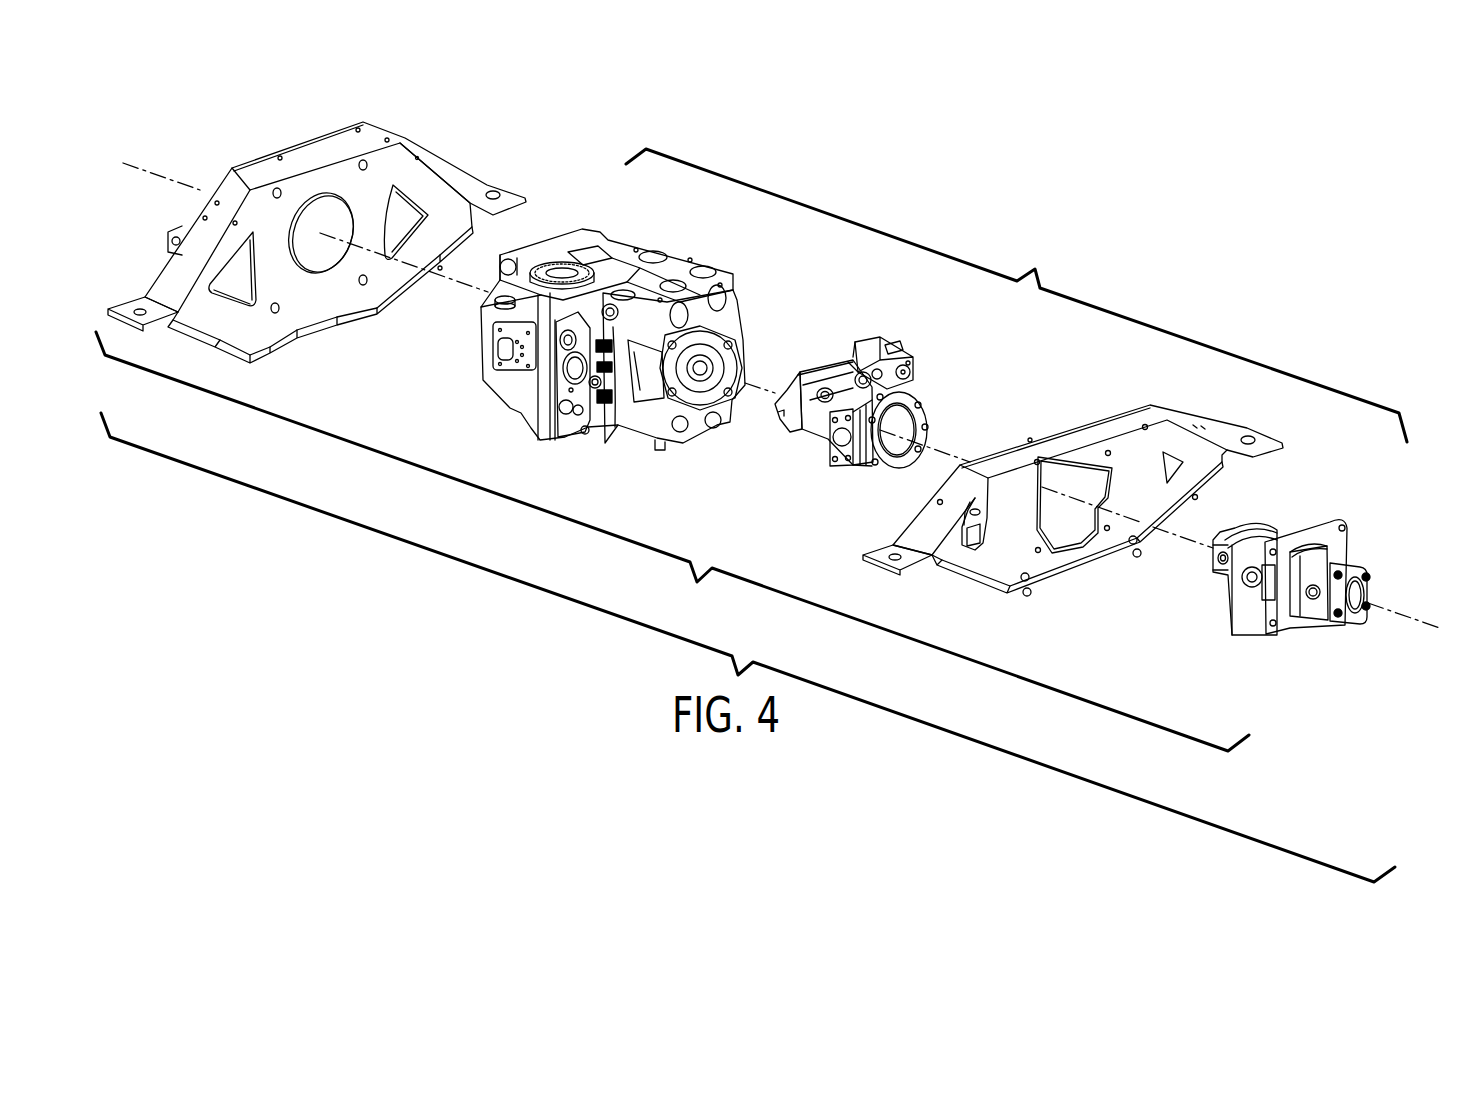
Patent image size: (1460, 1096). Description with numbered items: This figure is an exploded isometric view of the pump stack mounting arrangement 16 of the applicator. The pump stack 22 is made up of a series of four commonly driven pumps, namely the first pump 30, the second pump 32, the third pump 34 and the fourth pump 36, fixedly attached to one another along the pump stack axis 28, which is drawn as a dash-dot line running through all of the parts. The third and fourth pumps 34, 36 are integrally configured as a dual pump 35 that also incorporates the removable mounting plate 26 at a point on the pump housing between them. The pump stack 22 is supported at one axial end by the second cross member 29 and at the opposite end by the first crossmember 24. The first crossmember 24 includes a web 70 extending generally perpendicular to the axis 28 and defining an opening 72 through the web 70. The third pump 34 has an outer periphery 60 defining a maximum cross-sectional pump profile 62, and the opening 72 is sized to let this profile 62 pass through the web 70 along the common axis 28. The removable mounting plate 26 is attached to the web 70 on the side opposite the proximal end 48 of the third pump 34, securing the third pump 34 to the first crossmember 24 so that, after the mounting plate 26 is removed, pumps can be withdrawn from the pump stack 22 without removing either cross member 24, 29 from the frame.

The pump stack mounting arrangement 16 is at (745, 607).
The pump stack 22 is at (1016, 295).
The first crossmember 24 is at (1117, 422).
The removable mounting plate 26 is at (1332, 570).
The pump stack axis 28 is at (162, 177).
The second cross member 29 is at (331, 142).
The first pump 30 is at (546, 437).
The second pump 32 is at (816, 427).
The third pump 34 is at (1254, 597).
The dual pump 35 is at (1351, 553).
The fourth pump 36 is at (1334, 603).
The proximal end 48 is at (1237, 537).
The outer periphery 60 is at (1232, 585).
The maximum cross-sectional pump profile 62 is at (1230, 577).
The web 70 is at (1000, 548).
The opening 72 is at (1065, 517).